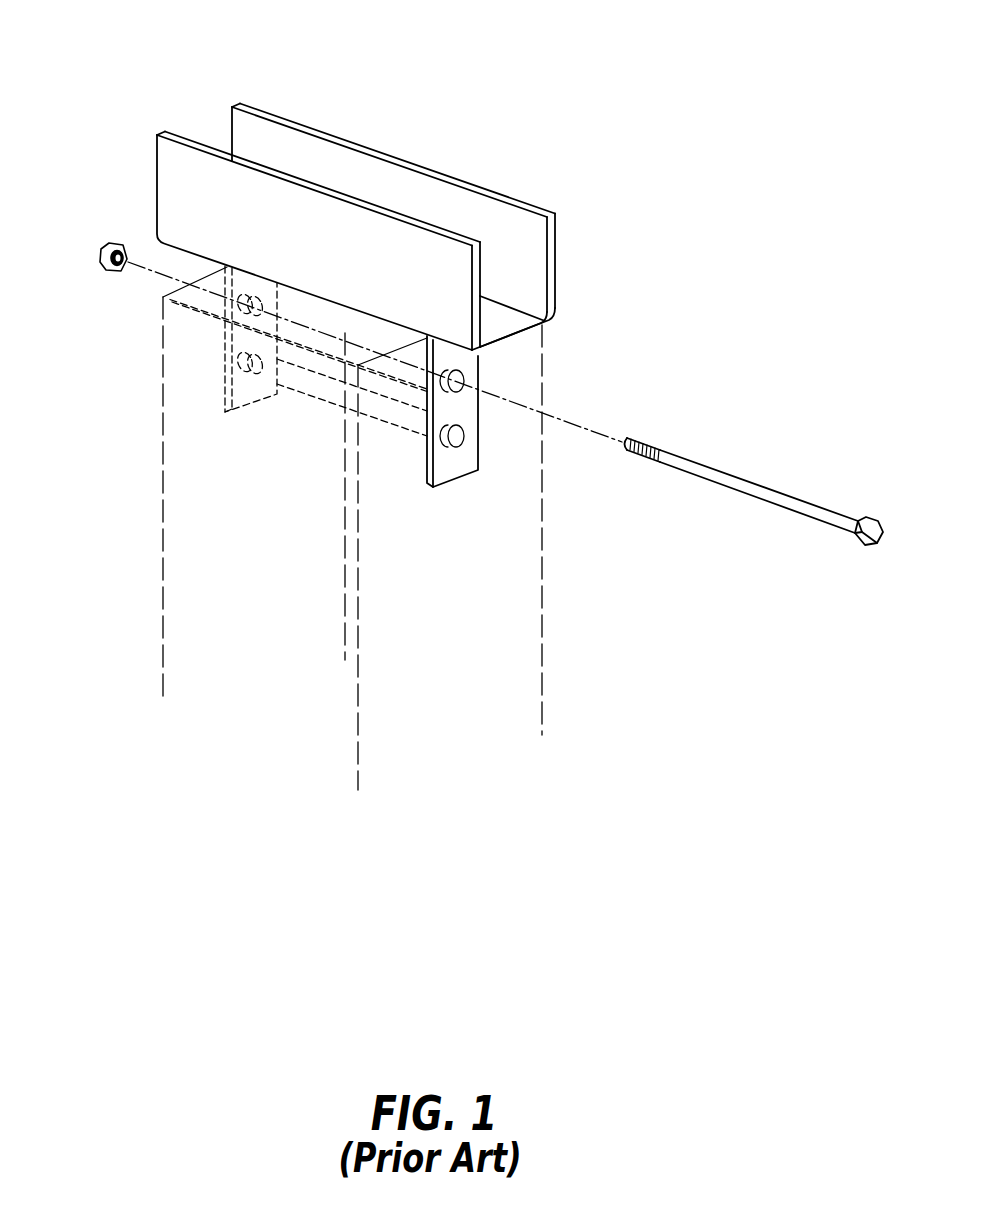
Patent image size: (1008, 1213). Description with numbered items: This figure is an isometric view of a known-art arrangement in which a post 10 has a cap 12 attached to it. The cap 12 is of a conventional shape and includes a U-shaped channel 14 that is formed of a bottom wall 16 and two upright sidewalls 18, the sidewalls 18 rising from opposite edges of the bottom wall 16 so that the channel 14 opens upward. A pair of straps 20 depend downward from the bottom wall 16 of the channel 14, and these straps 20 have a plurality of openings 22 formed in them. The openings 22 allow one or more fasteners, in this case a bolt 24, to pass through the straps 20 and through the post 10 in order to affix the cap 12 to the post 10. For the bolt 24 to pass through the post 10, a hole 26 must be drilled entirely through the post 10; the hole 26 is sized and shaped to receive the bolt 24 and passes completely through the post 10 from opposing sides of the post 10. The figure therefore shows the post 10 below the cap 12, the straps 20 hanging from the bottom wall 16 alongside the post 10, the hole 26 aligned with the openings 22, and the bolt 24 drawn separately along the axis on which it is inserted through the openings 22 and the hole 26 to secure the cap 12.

The post 10 is at (485, 628).
The cap 12 is at (582, 226).
The U-shaped channel 14 is at (184, 103).
The bottom wall 16 is at (503, 326).
The upright sidewalls 18 is at (177, 158).
The straps 20 is at (226, 337).
The openings 22 is at (467, 439).
The bolt 24 is at (760, 478).
The hole 26 is at (300, 396).